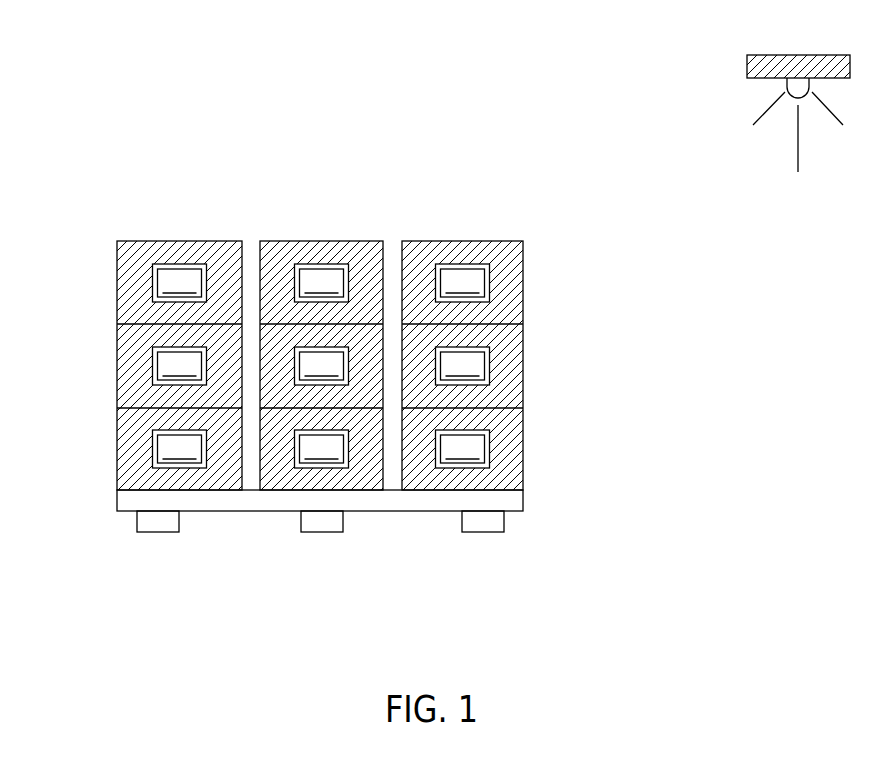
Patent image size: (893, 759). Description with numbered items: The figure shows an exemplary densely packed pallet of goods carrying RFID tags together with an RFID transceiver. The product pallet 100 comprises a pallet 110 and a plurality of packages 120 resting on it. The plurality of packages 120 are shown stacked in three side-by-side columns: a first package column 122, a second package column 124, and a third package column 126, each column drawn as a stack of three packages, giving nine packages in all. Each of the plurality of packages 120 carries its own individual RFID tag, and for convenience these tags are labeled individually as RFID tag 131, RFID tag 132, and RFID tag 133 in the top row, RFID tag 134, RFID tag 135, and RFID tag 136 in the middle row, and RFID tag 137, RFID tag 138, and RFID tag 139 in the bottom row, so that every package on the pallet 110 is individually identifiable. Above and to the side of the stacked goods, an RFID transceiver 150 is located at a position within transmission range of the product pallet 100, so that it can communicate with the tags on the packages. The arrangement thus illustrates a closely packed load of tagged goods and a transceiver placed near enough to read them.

The product pallet 100 is at (287, 133).
The pallet 110 is at (210, 512).
The plurality of packages 120 is at (97, 243).
The first package column 122 is at (242, 225).
The second package column 124 is at (383, 225).
The third package column 126 is at (523, 225).
The RFID tag 131 is at (180, 283).
The RFID tag 132 is at (322, 283).
The RFID tag 133 is at (463, 283).
The RFID tag 134 is at (180, 366).
The RFID tag 135 is at (322, 366).
The RFID tag 136 is at (463, 366).
The RFID tag 137 is at (180, 449).
The RFID tag 138 is at (322, 449).
The RFID tag 139 is at (463, 449).
The RFID transceiver 150 is at (747, 69).